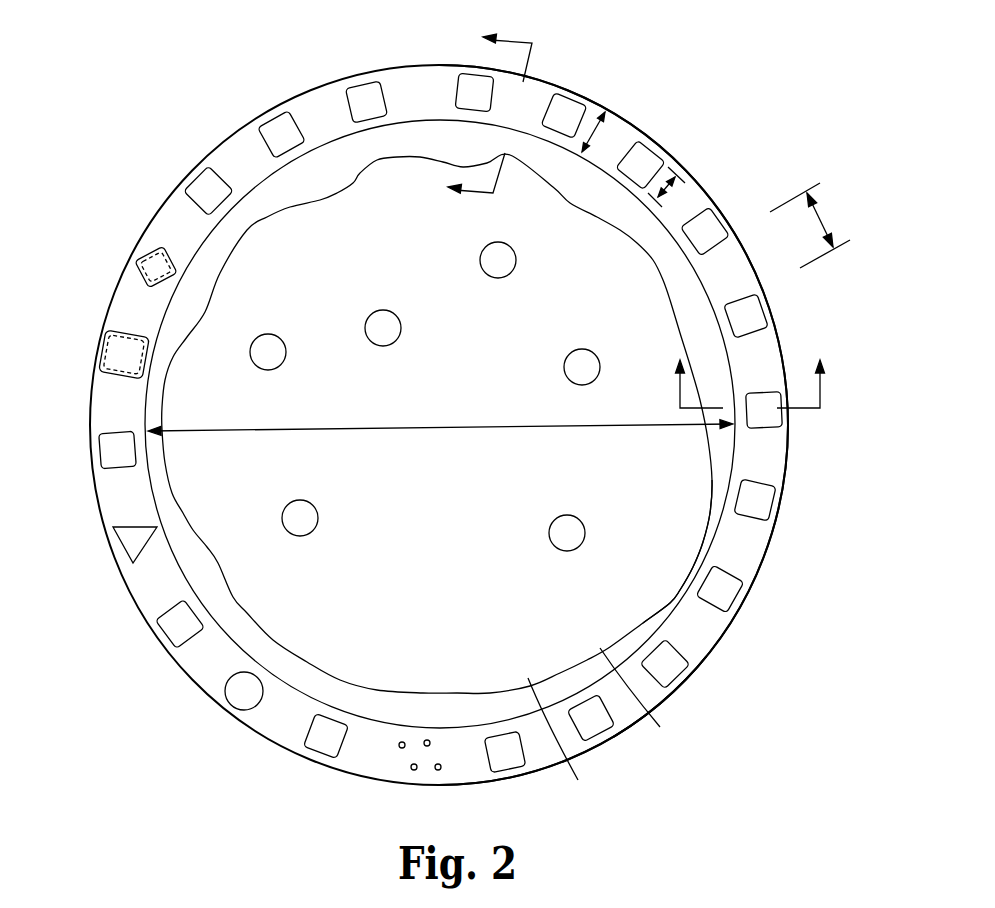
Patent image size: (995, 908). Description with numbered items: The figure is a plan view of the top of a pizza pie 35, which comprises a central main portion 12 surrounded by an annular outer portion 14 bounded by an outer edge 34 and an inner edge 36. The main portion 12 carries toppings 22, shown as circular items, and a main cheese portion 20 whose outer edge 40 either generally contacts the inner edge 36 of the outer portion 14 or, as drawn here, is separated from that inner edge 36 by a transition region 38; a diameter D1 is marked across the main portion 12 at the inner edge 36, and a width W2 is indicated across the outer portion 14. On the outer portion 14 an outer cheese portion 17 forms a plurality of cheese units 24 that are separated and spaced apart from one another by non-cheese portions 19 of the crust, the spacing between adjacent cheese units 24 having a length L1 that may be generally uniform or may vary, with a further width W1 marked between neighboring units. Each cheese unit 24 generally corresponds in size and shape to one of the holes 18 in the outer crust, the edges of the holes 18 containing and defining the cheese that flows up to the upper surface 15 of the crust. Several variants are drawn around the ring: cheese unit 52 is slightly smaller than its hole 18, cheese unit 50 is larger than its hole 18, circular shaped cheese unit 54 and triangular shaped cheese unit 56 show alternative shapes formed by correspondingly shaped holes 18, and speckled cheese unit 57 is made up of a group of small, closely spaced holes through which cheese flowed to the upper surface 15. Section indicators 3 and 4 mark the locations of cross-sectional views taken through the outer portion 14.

The main portion 12 is at (437, 423).
The outer portion 14 is at (740, 645).
The upper surface 15 is at (752, 515).
The outer cheese portion 17 is at (750, 606).
The holes 18 is at (160, 243).
The non-cheese portions 19 is at (743, 442).
The main cheese portion 20 is at (563, 745).
The toppings 22 is at (573, 363).
The cheese units 24 is at (755, 508).
The outer edge 34 is at (712, 656).
The pizza pie 35 is at (292, 74).
The inner edge 36 is at (672, 605).
The transition region 38 is at (703, 543).
The outer edge 40 is at (641, 704).
The cheese unit 50 is at (97, 360).
The cheese unit 52 is at (142, 258).
The circular shaped cheese unit 54 is at (243, 702).
The triangular shaped cheese unit 56 is at (133, 553).
The speckled cheese unit 57 is at (400, 775).
The inner diameter D1 is at (440, 444).
The pocket spacing width W1 is at (668, 188).
The rim width W2 is at (593, 133).
The length L1 is at (811, 225).
The section line 3- 3 is at (477, 108).
The section line 4- 4 is at (747, 366).